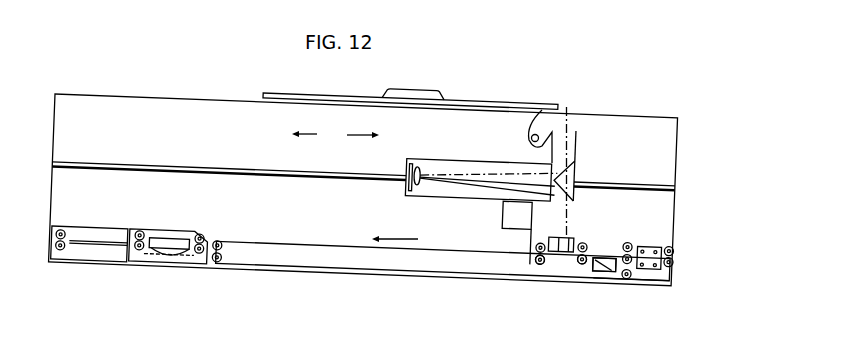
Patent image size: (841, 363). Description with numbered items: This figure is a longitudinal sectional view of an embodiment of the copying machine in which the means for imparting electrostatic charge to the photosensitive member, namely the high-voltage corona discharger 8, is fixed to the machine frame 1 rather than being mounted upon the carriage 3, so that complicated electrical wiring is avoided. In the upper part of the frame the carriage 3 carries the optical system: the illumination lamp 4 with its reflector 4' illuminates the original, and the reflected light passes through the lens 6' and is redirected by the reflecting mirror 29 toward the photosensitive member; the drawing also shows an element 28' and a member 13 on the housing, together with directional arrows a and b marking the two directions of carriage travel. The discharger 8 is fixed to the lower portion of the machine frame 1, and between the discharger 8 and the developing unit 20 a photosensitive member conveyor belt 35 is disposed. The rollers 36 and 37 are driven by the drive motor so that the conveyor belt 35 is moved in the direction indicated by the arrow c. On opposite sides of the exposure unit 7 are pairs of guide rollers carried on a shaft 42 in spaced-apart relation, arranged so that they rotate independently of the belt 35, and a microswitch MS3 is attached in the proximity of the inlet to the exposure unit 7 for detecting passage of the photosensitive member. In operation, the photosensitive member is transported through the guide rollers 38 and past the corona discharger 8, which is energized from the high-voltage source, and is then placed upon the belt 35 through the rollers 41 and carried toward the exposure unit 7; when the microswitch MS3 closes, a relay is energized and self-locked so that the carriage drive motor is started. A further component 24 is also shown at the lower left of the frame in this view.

The machine frame 1 is at (167, 112).
The slide bar with handle 13 is at (325, 101).
The carriage 3 is at (477, 161).
The reflecting mirror 29 is at (408, 170).
The lens 6' is at (427, 154).
The prism 28' is at (589, 165).
The illumination lamp 4 is at (552, 153).
The reflector 4' is at (524, 136).
The direction a is at (374, 136).
The direction b is at (297, 133).
The arrow indicating belt movement direction c is at (402, 238).
The photosensitive member conveyor belt 35 is at (290, 243).
The carriage 24 is at (93, 260).
The developing unit 20 is at (147, 262).
The roller 37 is at (217, 263).
The exposure unit 7 is at (553, 237).
The microswitch MS3 is at (611, 262).
The rollers 41 is at (628, 247).
The high-voltage corona discharger 8 is at (650, 245).
The guide rollers 38 is at (673, 244).
The shaft 42 is at (578, 266).
The roller 36 is at (629, 278).